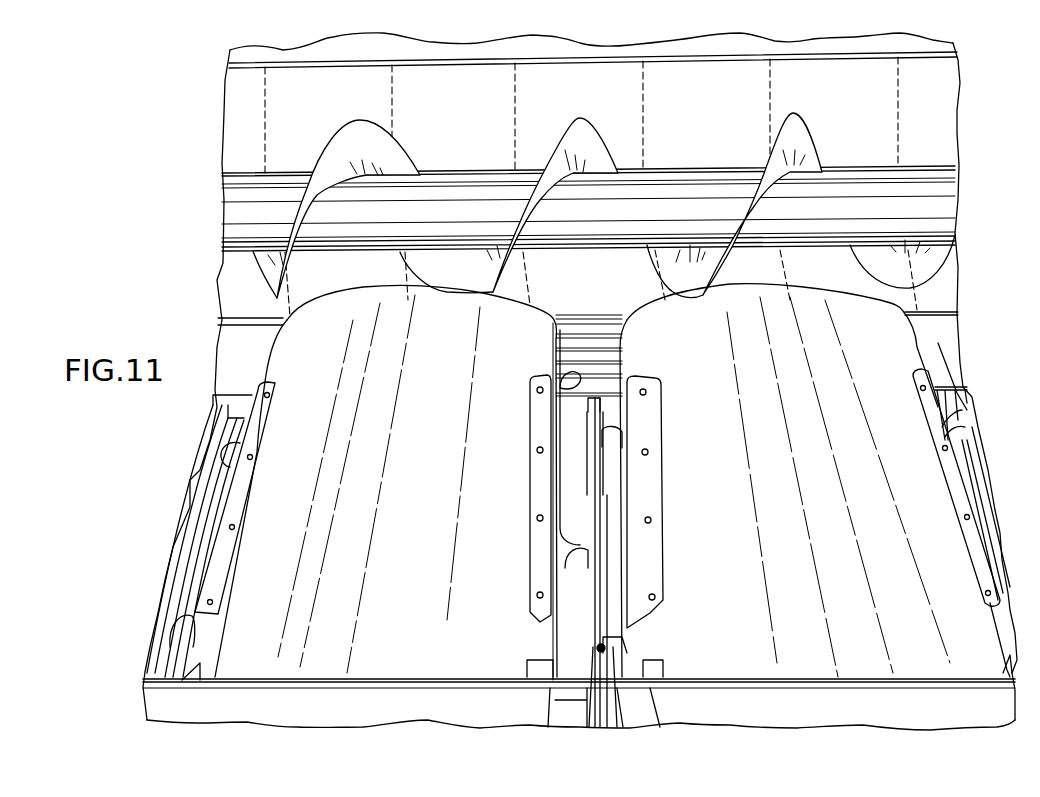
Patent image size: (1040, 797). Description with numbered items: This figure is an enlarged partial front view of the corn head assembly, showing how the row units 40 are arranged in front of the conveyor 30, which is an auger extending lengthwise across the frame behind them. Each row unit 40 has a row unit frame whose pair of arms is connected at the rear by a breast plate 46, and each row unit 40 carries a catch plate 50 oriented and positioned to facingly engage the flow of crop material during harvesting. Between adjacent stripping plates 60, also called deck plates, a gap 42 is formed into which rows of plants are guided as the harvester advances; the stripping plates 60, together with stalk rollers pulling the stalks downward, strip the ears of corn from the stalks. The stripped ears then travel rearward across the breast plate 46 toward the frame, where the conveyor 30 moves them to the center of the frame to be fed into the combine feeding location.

The conveyor 30 is at (373, 193).
The row unit 40 is at (578, 447).
The gap 42 is at (605, 640).
The breast plate 46 is at (242, 352).
The catch plate 50 is at (578, 343).
The deck plate (stripping plate) 60 is at (223, 497).